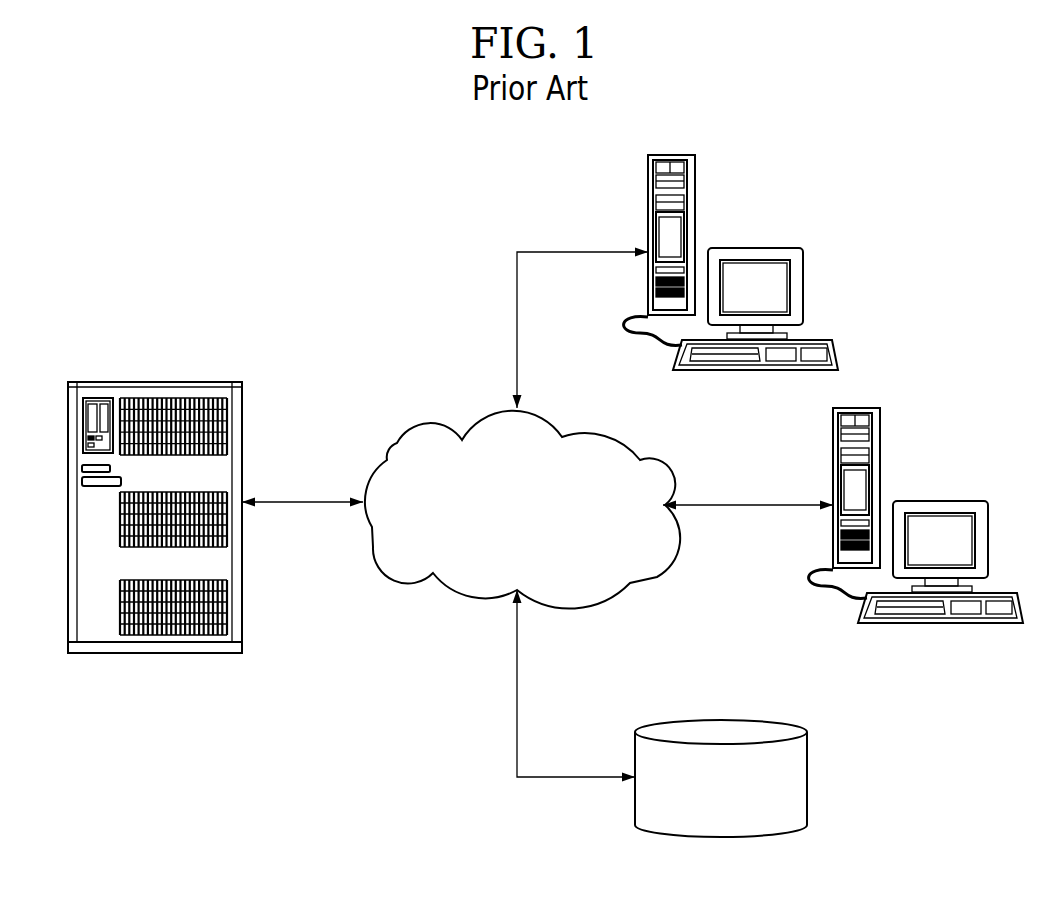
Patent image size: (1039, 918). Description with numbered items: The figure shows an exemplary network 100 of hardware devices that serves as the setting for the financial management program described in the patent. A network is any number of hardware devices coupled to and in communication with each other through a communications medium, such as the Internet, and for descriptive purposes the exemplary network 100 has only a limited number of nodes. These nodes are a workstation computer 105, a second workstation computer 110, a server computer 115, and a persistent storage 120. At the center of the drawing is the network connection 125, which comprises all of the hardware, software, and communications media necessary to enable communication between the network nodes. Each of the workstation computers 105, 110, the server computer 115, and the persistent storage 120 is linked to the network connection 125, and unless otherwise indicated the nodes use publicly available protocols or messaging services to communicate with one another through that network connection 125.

The exemplary network 100 is at (343, 240).
The workstation computer 105 is at (737, 248).
The workstation computer 110 is at (928, 502).
The server computer 115 is at (140, 382).
The persistent storage 120 is at (715, 718).
The network connection 125 is at (499, 518).